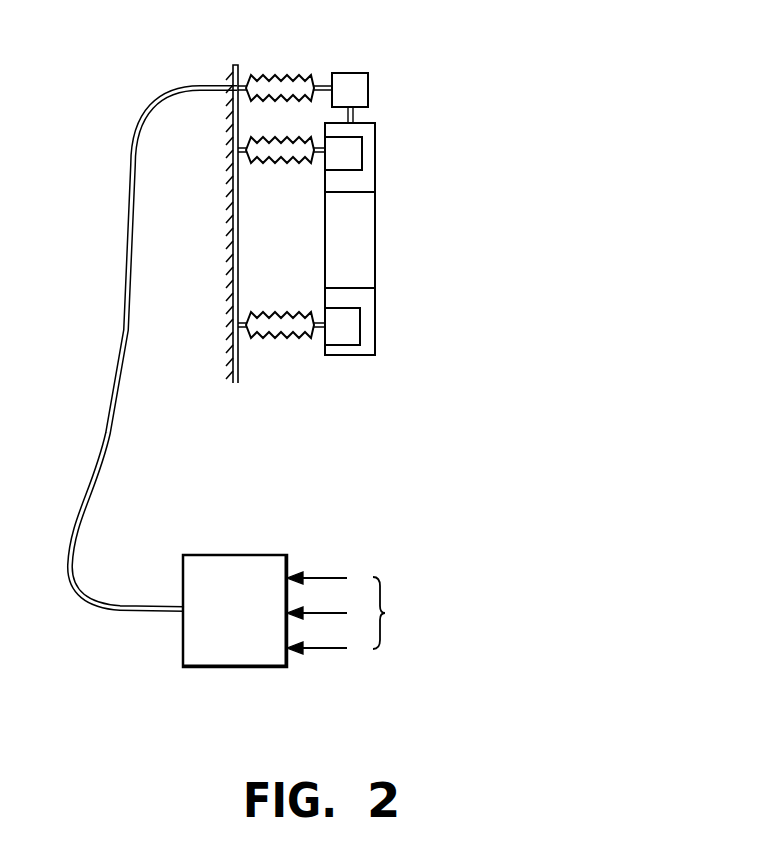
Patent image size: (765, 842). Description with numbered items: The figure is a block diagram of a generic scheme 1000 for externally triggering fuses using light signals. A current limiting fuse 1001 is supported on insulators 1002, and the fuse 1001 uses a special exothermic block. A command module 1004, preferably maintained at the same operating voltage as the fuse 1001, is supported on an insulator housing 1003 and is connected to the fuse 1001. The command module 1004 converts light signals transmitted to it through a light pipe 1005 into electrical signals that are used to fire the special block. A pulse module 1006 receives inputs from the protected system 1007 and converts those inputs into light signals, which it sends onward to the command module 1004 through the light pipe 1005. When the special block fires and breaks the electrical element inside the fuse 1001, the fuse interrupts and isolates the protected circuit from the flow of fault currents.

The generic scheme 1000 is at (552, 129).
The current limiting fuse 1001 is at (362, 255).
The insulators 1002 is at (287, 163).
The insulator housing 1003 is at (275, 80).
The command module 1004 is at (354, 80).
The light pipe 1005 is at (122, 353).
The pulse module 1006 is at (183, 582).
The protected system 1007 is at (524, 545).